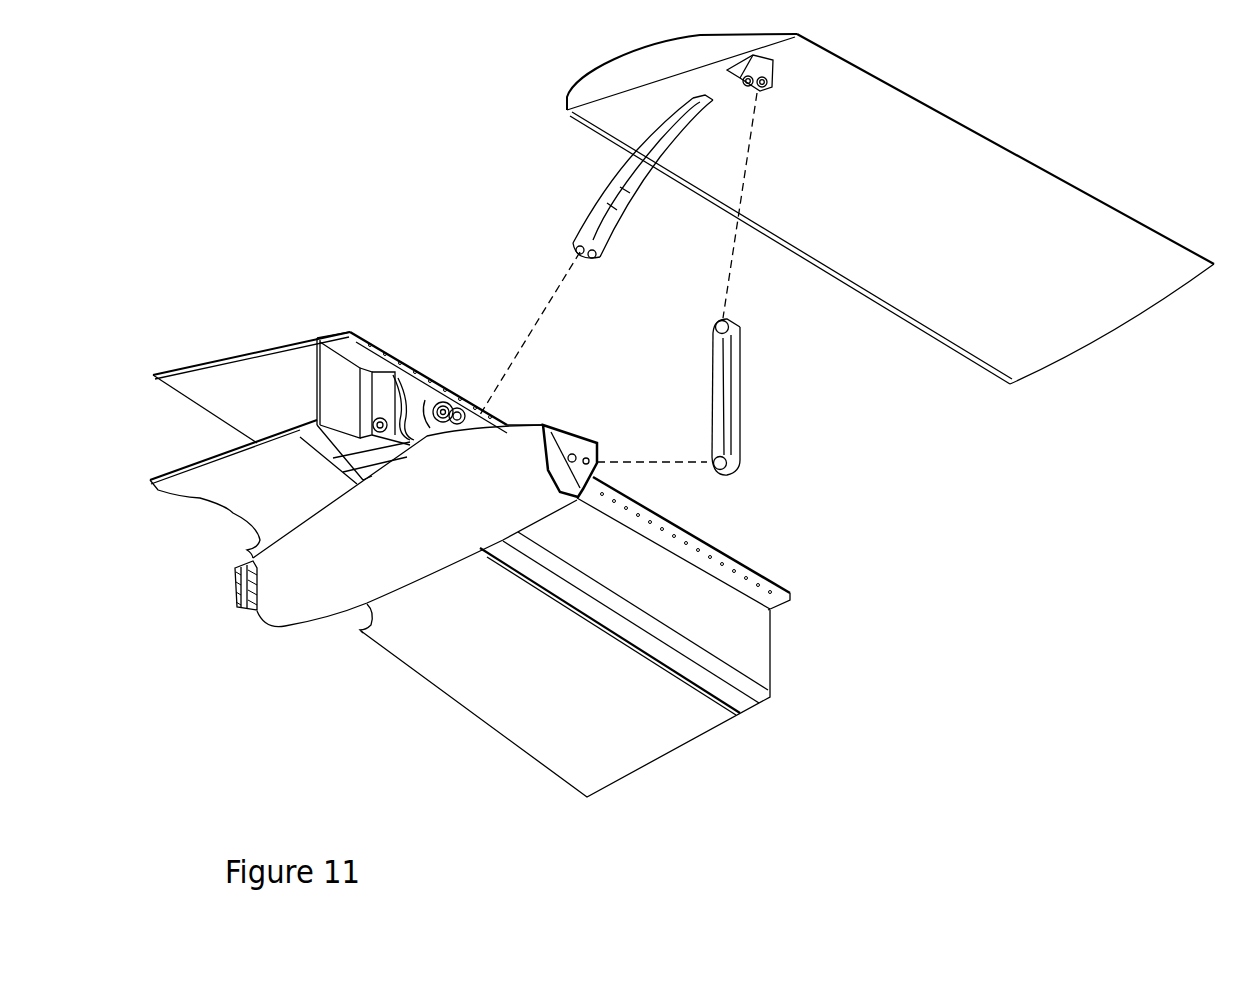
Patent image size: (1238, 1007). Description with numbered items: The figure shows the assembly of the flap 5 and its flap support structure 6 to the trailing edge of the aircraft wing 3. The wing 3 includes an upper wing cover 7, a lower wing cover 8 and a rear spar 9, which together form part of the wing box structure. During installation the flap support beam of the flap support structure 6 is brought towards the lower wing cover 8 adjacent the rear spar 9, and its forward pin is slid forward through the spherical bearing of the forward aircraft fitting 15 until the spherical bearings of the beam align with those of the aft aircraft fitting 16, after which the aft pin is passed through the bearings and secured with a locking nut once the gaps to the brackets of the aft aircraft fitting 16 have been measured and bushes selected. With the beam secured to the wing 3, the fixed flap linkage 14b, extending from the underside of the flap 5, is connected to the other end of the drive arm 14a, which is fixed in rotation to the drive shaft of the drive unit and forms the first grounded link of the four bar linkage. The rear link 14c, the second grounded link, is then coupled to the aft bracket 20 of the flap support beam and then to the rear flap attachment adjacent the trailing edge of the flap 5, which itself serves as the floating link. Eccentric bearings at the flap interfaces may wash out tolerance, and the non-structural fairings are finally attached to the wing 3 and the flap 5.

The wing 3 is at (340, 334).
The flap 5 is at (1084, 253).
The flap support structure 6 is at (313, 587).
The upper wing cover 7 is at (251, 345).
The lower wing cover 8 is at (220, 483).
The rear spar 9 is at (333, 400).
The drive arm 14a is at (428, 404).
The fixed flap linkage 14b is at (600, 213).
The rear link 14c is at (730, 400).
The forward aircraft fitting 15 is at (221, 594).
The aft aircraft fitting 16 is at (397, 338).
The aft bracket 20 is at (553, 450).